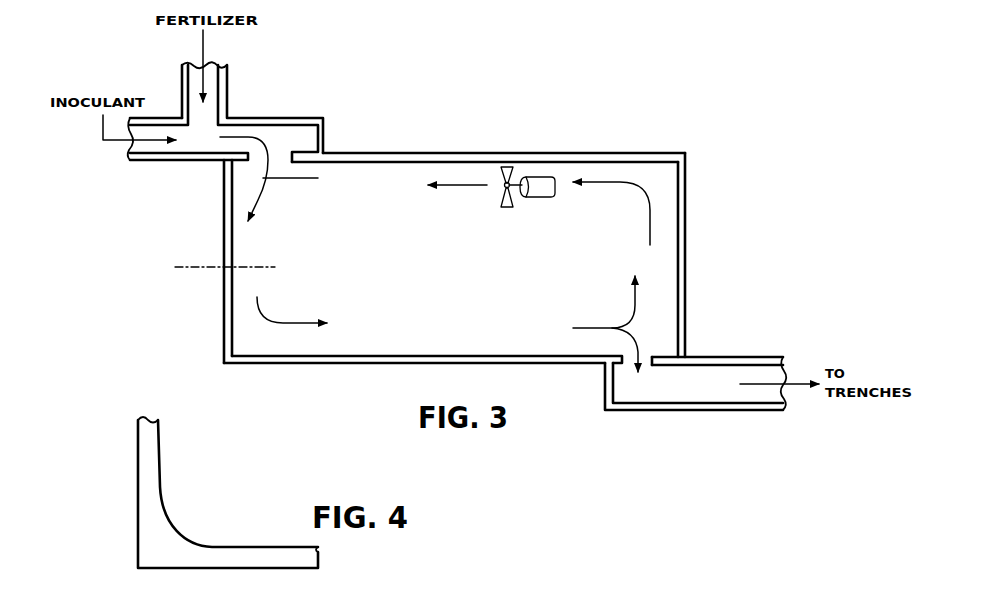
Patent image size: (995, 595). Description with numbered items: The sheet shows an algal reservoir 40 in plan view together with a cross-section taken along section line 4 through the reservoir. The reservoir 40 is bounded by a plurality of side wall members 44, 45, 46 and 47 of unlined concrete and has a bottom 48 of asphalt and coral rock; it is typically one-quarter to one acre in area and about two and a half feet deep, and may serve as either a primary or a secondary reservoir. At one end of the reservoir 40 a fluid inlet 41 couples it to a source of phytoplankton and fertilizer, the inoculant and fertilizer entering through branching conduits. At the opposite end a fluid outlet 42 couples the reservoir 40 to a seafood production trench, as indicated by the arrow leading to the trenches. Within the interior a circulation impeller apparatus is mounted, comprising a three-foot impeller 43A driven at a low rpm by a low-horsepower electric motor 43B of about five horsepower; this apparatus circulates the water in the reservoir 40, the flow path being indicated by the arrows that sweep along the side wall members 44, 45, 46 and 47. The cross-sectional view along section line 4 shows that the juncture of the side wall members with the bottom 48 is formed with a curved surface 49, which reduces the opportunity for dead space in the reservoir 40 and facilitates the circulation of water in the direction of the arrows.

In FIG. 3, the algal reservoir 40 is at (462, 242).
In FIG. 3, the fluid inlet 41 is at (290, 135).
In FIG. 3, the fluid outlet 42 is at (695, 380).
In FIG. 3, the impeller 43A is at (512, 170).
In FIG. 3, the electric motor 43B is at (530, 197).
In FIG. 3, the side wall member 44 is at (365, 153).
In FIG. 3, the side wall member 45 is at (685, 280).
In FIG. 3, the side wall member 46 is at (263, 363).
In FIG. 3, the side wall member 47 is at (223, 302).
In FIG. 3, the bottom 48 is at (352, 253).
In FIG. 4, the curved surface 49 is at (178, 523).
In FIG. 3, the section line 4 is at (182, 270).